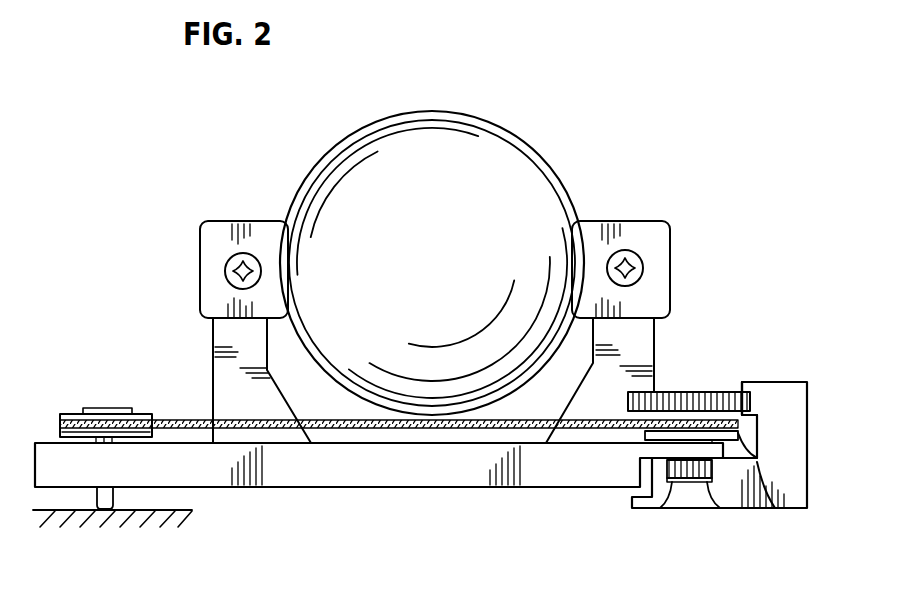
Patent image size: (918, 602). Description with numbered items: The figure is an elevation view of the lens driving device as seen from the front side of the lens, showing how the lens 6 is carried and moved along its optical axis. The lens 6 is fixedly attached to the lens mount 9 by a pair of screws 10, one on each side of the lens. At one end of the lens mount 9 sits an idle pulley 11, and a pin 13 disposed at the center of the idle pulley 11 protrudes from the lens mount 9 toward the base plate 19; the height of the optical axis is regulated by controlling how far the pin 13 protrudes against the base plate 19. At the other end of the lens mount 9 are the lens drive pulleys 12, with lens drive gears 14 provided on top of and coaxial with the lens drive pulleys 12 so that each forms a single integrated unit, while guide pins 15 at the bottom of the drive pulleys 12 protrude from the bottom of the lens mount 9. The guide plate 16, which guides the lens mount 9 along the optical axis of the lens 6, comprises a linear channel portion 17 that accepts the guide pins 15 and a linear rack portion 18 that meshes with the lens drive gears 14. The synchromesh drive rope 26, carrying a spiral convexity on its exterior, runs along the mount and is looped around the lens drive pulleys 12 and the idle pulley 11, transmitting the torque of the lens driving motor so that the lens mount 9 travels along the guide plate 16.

The lens 6 is at (527, 146).
The screws 10 is at (233, 265).
The idle pulley 11 is at (73, 413).
The synchromesh drive rope 26 is at (186, 419).
The lens mount 9 is at (438, 490).
The pin 13 is at (113, 497).
The base plate 19 is at (112, 540).
The lens drive gears 14 is at (680, 393).
The guide plate 16 is at (808, 432).
The linear rack portion 18 is at (747, 387).
The lens drive pulleys 12 is at (777, 510).
The guide pins 15 is at (716, 500).
The linear channel portion 17 is at (663, 507).